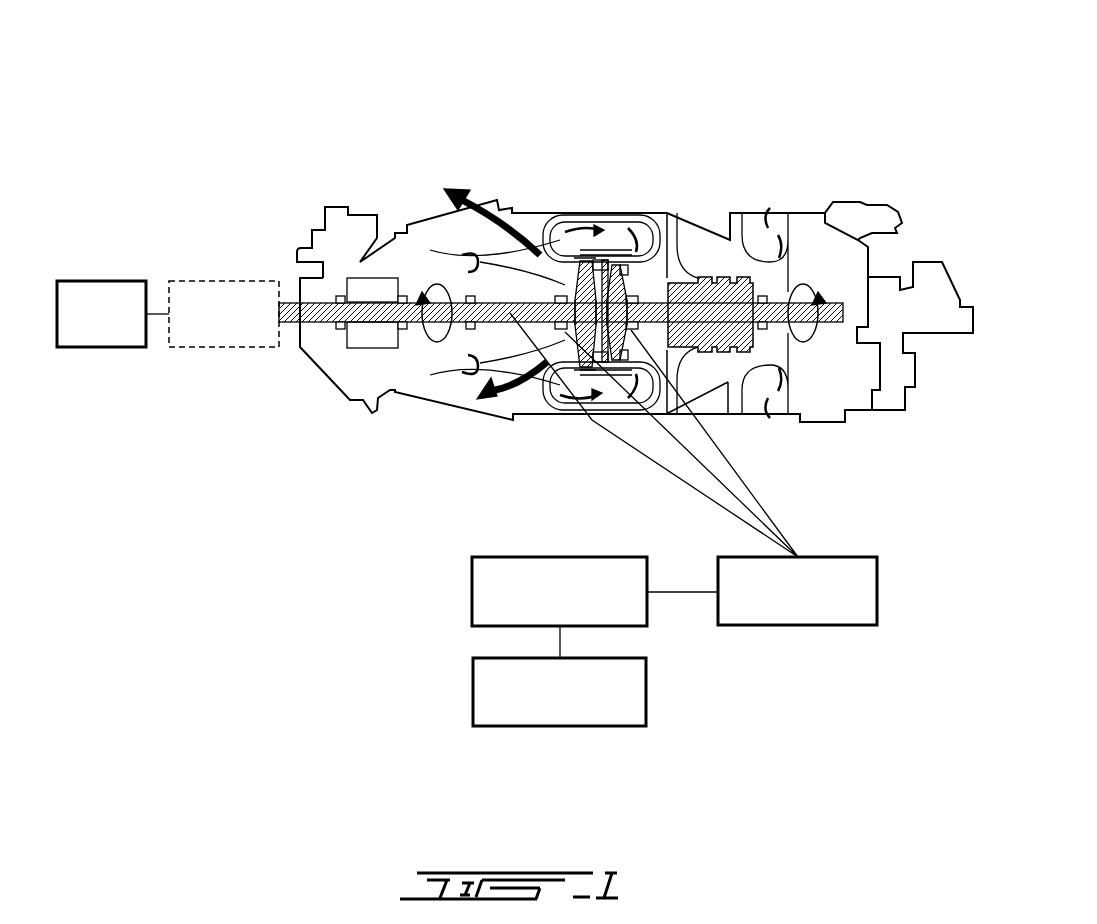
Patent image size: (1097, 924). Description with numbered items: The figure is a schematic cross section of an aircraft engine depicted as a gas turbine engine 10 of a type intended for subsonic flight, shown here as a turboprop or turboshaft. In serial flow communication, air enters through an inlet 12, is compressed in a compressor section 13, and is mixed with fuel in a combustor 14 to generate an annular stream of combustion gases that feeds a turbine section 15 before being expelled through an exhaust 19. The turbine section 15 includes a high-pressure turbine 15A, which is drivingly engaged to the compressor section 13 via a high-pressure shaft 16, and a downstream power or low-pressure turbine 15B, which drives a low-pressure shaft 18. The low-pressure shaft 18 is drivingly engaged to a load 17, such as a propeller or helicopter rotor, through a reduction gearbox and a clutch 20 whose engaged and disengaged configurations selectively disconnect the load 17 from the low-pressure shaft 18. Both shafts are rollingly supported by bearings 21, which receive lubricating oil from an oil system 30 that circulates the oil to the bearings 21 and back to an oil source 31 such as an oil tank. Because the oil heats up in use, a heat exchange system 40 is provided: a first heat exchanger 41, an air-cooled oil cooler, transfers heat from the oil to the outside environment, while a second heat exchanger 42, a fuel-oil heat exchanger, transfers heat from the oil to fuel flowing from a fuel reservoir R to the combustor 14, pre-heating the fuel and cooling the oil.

The gas turbine engine 10 is at (582, 122).
The inlet 12 is at (783, 207).
The compressor section 13 is at (696, 273).
The combustor 14 is at (609, 397).
The turbine section 15 is at (574, 247).
The high-pressure turbine 15A is at (640, 343).
The low-pressure turbine 15B is at (487, 337).
The high-pressure shaft 16 is at (645, 296).
The load 17 is at (103, 280).
The low-pressure shaft 18 is at (468, 365).
The exhaust 19 is at (437, 222).
The clutch 20 is at (225, 280).
The bearings 21 is at (559, 296).
The oil system 30 is at (635, 558).
The oil source 31 is at (878, 593).
The heat exchange system 40 is at (445, 558).
The first heat exchanger 41 is at (472, 587).
The second heat exchanger 42 is at (495, 591).
The fuel reservoir R is at (558, 727).